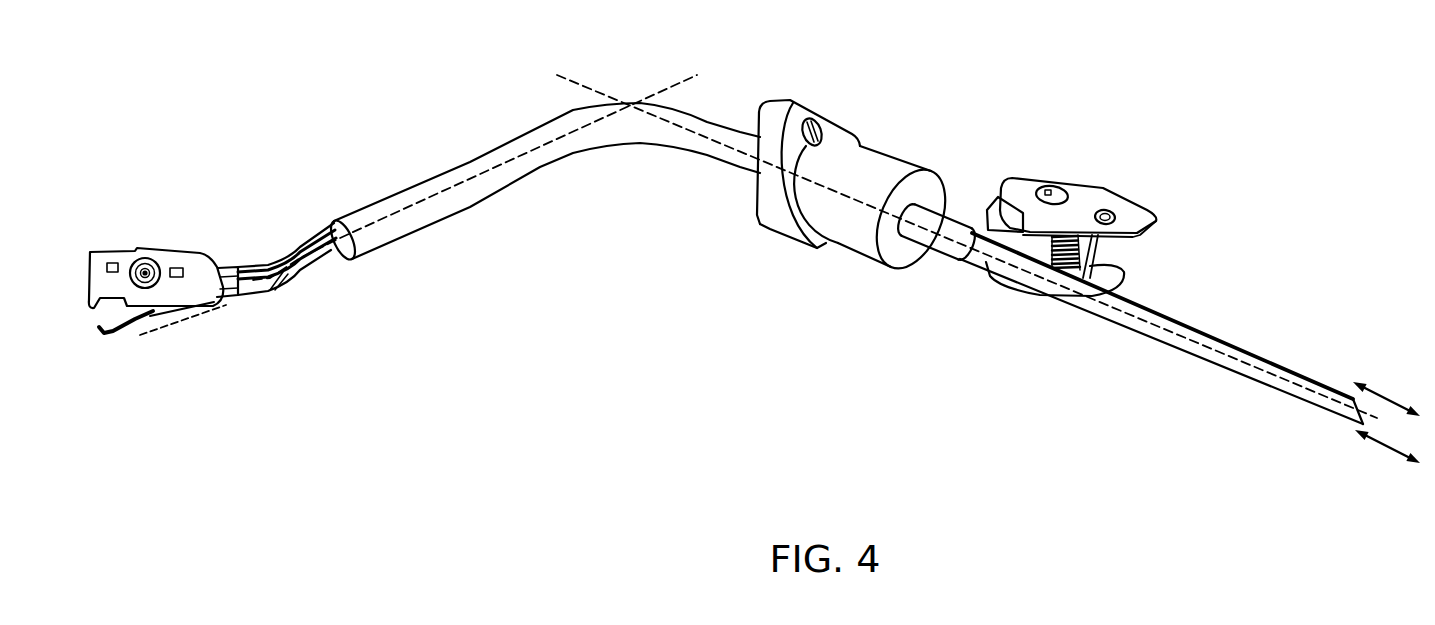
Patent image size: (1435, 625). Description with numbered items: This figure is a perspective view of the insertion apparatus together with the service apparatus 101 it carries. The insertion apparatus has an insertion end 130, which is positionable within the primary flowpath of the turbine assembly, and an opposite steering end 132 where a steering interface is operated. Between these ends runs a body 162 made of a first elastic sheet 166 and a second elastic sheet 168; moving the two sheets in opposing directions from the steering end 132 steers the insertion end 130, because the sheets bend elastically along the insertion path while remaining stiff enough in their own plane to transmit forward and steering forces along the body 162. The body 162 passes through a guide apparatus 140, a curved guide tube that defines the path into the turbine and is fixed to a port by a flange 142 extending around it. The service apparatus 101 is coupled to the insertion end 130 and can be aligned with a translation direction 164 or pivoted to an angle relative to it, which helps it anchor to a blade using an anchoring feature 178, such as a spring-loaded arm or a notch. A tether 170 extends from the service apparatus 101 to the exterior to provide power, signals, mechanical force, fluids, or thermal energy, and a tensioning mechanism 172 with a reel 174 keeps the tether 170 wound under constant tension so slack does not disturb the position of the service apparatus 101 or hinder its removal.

The service apparatus 101 is at (100, 311).
The insertion end 130 is at (236, 264).
The steering end 132 is at (1349, 429).
The guide apparatus 140 is at (500, 137).
The flange 142 is at (828, 113).
The body 162 is at (1202, 364).
The translation direction 164 is at (673, 82).
The first elastic sheet 166 is at (275, 256).
The second elastic sheet 168 is at (327, 266).
The tether 170 is at (289, 251).
The tensioning mechanism 172 is at (1113, 182).
The reel 174 is at (1041, 254).
The anchoring feature 178 is at (150, 314).